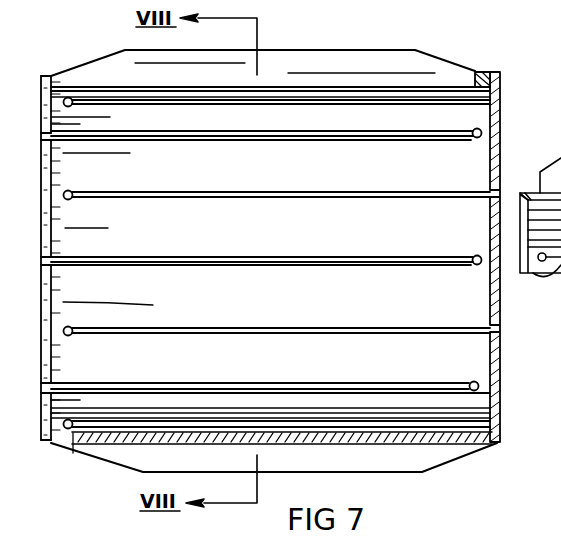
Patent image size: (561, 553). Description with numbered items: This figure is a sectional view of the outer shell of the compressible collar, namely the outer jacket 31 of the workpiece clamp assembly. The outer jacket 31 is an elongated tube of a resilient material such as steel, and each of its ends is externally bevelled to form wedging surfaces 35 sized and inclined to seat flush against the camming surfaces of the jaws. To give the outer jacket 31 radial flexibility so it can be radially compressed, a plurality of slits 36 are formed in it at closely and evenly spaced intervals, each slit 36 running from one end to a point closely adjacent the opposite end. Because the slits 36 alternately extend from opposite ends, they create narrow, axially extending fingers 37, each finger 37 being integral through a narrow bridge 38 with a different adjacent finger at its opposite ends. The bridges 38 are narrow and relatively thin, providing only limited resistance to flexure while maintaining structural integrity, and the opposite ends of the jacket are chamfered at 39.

The outer jacket 31 is at (502, 133).
The wedging surfaces 35 is at (73, 65).
The slits 36 is at (431, 190).
The fingers 37 is at (118, 232).
The bridge 38 is at (490, 72).
The chamfer 39 is at (53, 405).